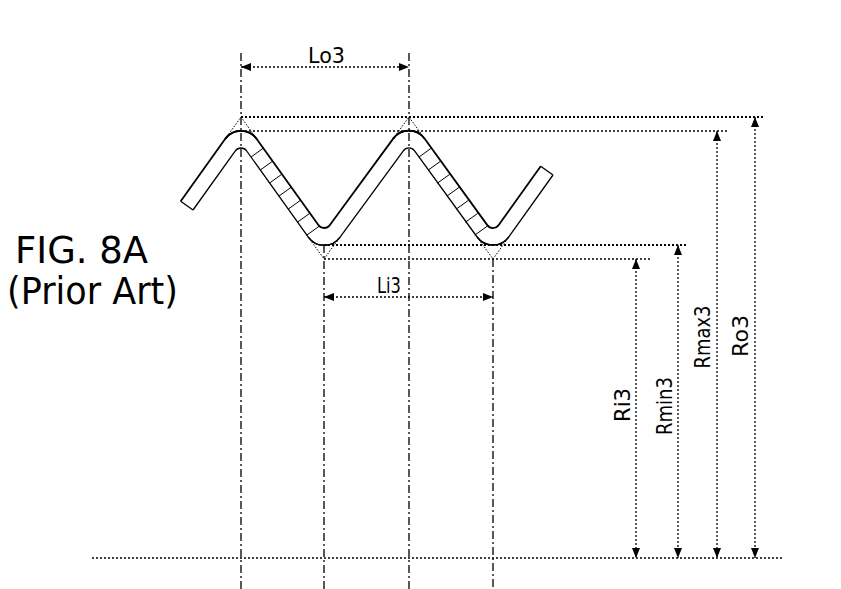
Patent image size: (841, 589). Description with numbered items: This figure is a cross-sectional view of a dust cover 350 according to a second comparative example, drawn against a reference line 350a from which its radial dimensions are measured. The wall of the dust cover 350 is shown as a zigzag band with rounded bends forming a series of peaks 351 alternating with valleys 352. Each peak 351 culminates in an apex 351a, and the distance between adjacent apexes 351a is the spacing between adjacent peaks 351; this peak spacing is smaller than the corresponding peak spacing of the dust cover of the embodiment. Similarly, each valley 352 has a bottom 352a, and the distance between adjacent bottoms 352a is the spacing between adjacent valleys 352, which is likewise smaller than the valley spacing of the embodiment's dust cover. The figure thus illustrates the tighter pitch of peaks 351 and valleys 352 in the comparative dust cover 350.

The dust cover 350 is at (147, 78).
The peaks 351 is at (210, 132).
The apexes 351a is at (241, 117).
The valleys 352 is at (311, 259).
The bottoms 352a is at (324, 259).
The gear axis 350a is at (410, 559).